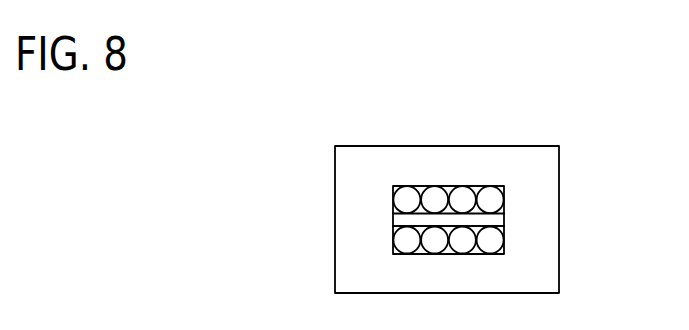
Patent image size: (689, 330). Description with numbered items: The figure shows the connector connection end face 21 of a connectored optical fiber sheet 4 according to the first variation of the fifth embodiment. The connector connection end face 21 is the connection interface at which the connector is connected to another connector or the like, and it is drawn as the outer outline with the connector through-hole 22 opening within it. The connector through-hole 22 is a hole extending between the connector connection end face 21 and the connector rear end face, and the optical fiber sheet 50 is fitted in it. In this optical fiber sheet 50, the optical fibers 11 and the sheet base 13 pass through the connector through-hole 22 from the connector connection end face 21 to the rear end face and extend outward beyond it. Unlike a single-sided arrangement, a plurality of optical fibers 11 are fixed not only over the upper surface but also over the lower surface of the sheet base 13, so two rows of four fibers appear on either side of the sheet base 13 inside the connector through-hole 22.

The connectored optical fiber sheet 4 is at (462, 120).
The connector connection end face 21 is at (559, 167).
The connector through-hole 22 is at (504, 210).
The optical fiber sheet 50 is at (270, 185).
The optical fibers 11 is at (425, 187).
The sheet base 13 is at (399, 221).